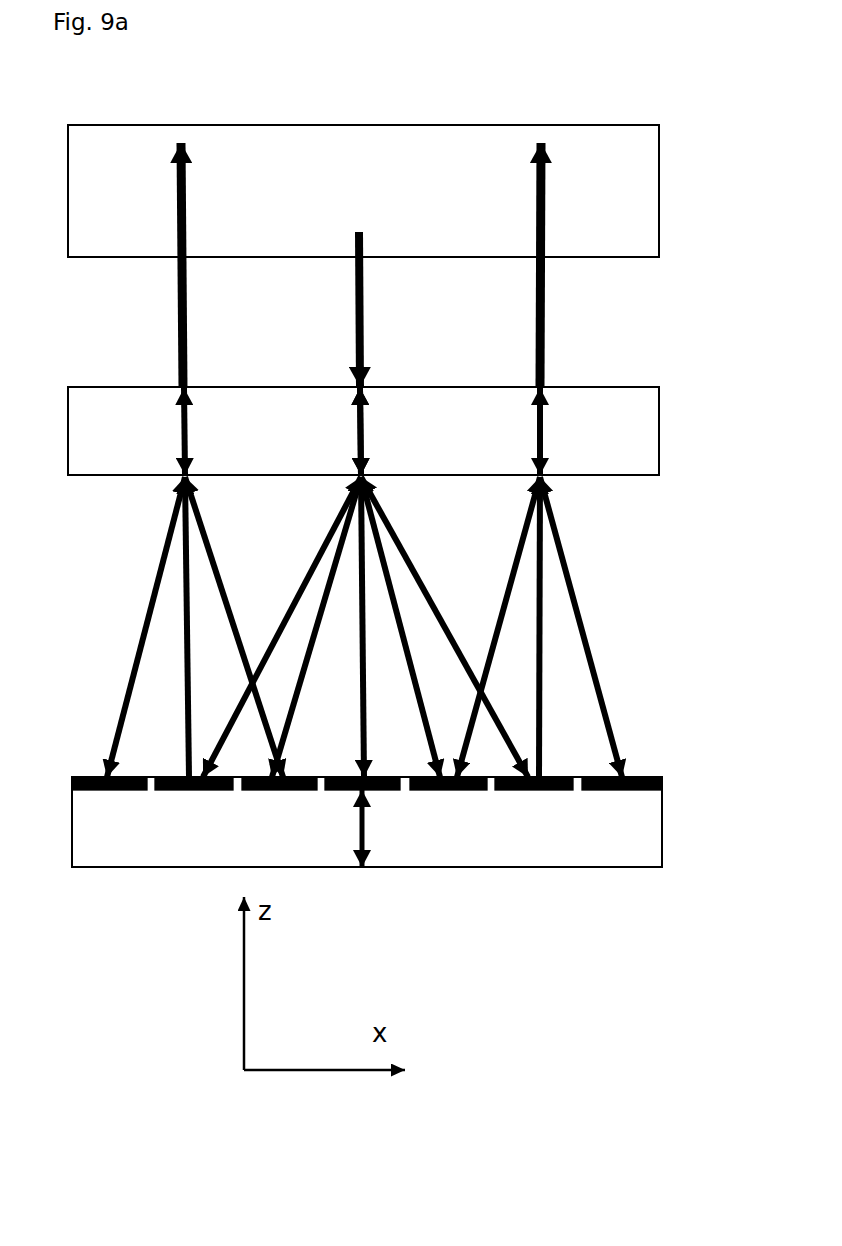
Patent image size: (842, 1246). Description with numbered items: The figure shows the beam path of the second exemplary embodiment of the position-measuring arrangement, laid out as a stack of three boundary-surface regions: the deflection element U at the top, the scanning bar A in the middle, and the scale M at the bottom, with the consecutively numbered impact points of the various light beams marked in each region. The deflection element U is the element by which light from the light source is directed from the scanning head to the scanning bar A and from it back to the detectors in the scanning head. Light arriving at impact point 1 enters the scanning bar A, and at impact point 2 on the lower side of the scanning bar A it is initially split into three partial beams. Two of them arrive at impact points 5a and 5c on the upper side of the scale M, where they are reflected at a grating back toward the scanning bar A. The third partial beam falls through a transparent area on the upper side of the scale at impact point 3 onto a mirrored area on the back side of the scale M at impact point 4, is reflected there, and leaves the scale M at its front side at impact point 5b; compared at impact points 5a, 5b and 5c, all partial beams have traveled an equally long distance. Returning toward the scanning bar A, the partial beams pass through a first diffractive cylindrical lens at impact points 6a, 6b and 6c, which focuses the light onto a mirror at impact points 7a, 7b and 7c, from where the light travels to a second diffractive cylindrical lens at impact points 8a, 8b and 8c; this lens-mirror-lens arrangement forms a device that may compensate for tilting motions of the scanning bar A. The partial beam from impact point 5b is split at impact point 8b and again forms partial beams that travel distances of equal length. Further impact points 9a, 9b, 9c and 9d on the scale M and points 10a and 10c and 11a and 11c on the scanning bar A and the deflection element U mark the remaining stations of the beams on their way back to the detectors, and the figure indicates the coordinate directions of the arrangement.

The incident light beam 1 is at (337, 309).
The impact point on lower side of scanning bar 2 is at (339, 431).
The impact point at transparent area of scale 3 is at (342, 627).
The impact point on mirrored back side of scale 4 is at (340, 828).
The impact point on upper side of scale 5a is at (194, 801).
The impact point on front side of scale 5b is at (355, 801).
The impact point on upper side of scale 5c is at (534, 801).
The impact point at first diffractive cylindrical lens 6a is at (141, 626).
The impact point at first diffractive cylindrical lens 6b is at (365, 626).
The impact point at first diffractive cylindrical lens 6c is at (542, 626).
The impact point on mirror 7a is at (153, 431).
The impact point on mirror 7b is at (388, 409).
The impact point on mirror 7c is at (570, 431).
The impact point at second diffractive cylindrical lens 8a is at (149, 627).
The impact point at second diffractive cylindrical lens 8b is at (391, 453).
The impact point at second diffractive cylindrical lens 8c is at (577, 627).
The sensor element 9a is at (109, 801).
The sensor element 9b is at (279, 801).
The sensor element 9c is at (622, 801).
The sensor element 9d is at (448, 801).
The scattered light beam 10a is at (192, 627).
The scattered light beam 10c is at (582, 627).
The emitted light beam 11a is at (152, 265).
The emitted light beam 11c is at (572, 265).
The deflection element U is at (640, 200).
The scanning bar A is at (645, 440).
The scale M is at (646, 842).